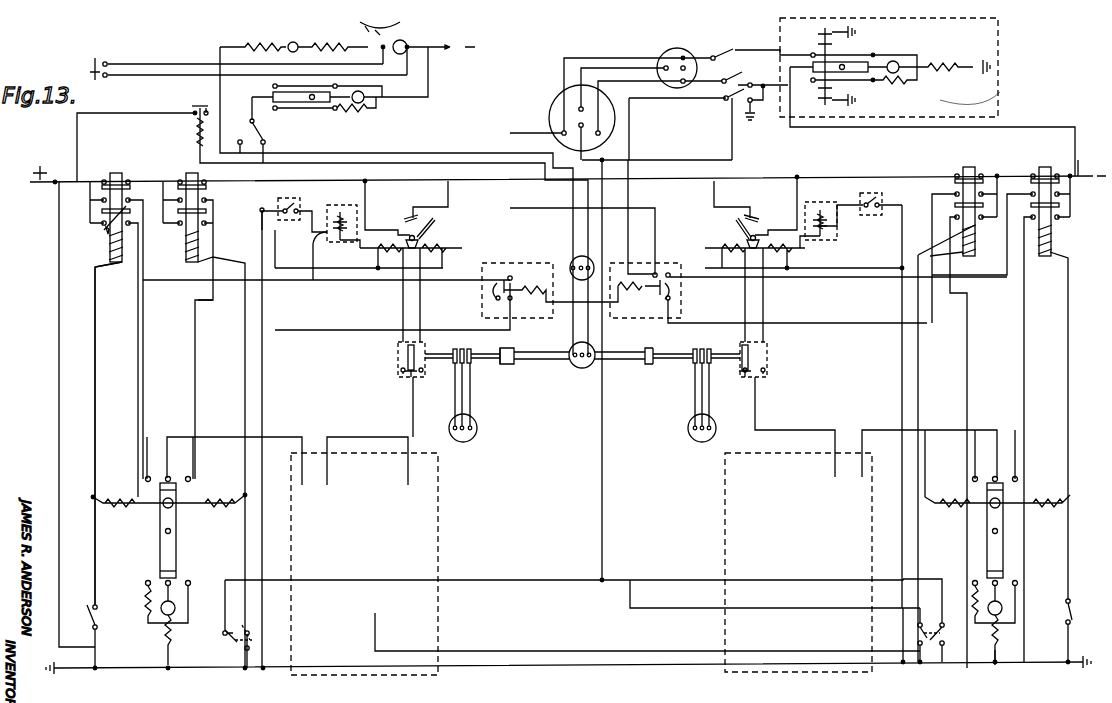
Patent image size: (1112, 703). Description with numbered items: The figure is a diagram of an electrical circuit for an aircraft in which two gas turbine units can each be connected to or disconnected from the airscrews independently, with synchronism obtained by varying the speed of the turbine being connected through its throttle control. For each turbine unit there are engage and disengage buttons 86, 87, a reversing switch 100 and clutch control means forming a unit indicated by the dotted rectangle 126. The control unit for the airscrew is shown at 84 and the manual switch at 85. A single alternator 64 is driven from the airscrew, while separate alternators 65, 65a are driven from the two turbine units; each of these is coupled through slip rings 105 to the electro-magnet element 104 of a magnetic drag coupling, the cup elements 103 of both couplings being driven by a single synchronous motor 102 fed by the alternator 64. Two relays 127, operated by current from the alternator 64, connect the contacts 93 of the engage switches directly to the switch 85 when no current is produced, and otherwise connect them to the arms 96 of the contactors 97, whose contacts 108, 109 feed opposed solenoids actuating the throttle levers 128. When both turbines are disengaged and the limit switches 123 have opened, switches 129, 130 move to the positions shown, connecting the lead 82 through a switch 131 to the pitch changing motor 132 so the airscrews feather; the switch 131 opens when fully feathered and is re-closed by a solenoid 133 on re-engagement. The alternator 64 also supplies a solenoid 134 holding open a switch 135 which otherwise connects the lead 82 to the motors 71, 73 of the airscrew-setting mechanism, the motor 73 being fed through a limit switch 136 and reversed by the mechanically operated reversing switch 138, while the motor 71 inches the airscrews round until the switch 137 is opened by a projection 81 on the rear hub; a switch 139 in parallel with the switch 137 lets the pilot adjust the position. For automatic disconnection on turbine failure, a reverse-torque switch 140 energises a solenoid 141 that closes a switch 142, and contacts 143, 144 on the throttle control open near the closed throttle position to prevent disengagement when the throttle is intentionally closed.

The alternator 64 is at (574, 259).
The alternator 65 is at (478, 424).
The alternator 65a is at (688, 432).
The motor 71 is at (297, 44).
The motor 73 is at (370, 109).
The projection 81 is at (360, 30).
The lead 82 is at (56, 180).
The control unit 84 is at (672, 48).
The manual switch 85 is at (552, 104).
The engage button 86 is at (114, 172).
The disengage button 87 is at (188, 172).
The contacts 93 is at (128, 202).
The arms 96 is at (405, 353).
The contactors 97 is at (400, 367).
The reversing switch 100 is at (187, 561).
The synchronous motor 102 is at (584, 370).
The cup elements 103 is at (515, 362).
The electro-magnet element 104 is at (507, 350).
The slip rings 105 is at (472, 365).
The contact 108 is at (404, 375).
The contact 109 is at (423, 373).
The limit switches 123 is at (255, 633).
The unit 126 is at (440, 488).
The relays 127 is at (487, 262).
The throttle levers 128 is at (425, 236).
The switch 129 is at (232, 643).
The switch 130 is at (944, 632).
The switch 131 is at (740, 88).
The pitch changing motor 132 is at (927, 97).
The solenoid 133 is at (735, 112).
The solenoid 134 is at (196, 130).
The switch 135 is at (200, 106).
The limit switch 136 is at (258, 138).
The switch 137 is at (410, 42).
The reversing switch 138 is at (321, 113).
The switch 139 is at (248, 62).
The switch 140 is at (298, 200).
The solenoid 141 is at (326, 228).
The switch 142 is at (340, 242).
The contact 143 is at (407, 214).
The contact 144 is at (433, 216).